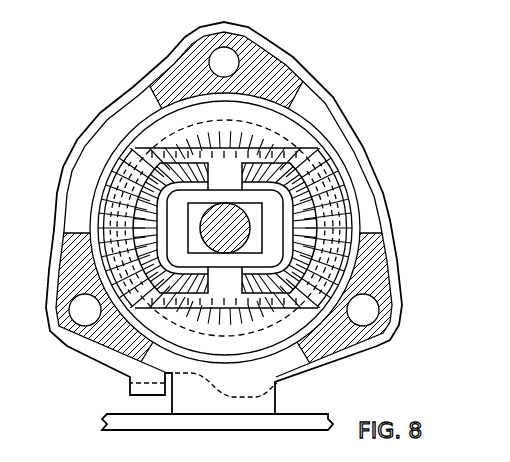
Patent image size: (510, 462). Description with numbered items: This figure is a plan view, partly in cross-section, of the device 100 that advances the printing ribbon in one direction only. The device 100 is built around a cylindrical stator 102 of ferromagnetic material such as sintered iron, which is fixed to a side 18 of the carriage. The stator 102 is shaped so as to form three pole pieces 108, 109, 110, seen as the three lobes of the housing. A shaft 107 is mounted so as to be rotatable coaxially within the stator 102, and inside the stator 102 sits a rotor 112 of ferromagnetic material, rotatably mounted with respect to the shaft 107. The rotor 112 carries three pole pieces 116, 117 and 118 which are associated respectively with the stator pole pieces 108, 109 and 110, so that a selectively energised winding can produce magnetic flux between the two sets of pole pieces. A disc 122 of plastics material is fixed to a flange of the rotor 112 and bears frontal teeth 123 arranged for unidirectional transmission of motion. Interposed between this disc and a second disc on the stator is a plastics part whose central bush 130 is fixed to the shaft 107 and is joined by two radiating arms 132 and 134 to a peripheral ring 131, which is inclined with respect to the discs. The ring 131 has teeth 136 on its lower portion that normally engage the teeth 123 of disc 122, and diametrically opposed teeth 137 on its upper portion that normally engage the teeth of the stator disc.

The device 100 is at (107, 377).
The cylindrical stator 102 is at (372, 193).
The shaft 107 is at (346, 152).
The pole piece 108 is at (270, 63).
The pole piece 109 is at (372, 193).
The pole piece 110 is at (68, 263).
The rotor 112 is at (329, 129).
The pole piece 116 is at (128, 147).
The pole piece 117 is at (347, 225).
The pole piece 118 is at (170, 348).
The disc 122 is at (284, 126).
The frontal teeth 123 is at (152, 132).
The central bush 130 is at (242, 221).
The peripheral ring 131 is at (118, 178).
The radiating arm 132 is at (242, 184).
The radiating arm 134 is at (242, 290).
The teeth 136 is at (108, 207).
The teeth 137 is at (356, 228).
The side 18 is at (126, 416).